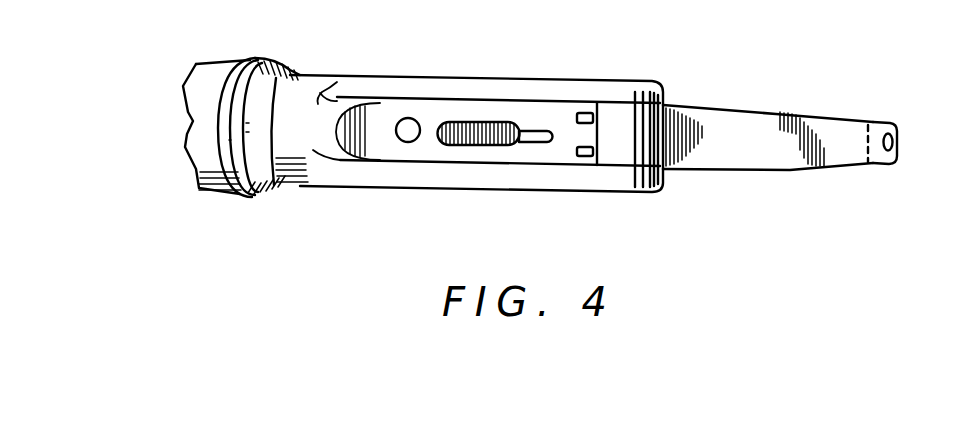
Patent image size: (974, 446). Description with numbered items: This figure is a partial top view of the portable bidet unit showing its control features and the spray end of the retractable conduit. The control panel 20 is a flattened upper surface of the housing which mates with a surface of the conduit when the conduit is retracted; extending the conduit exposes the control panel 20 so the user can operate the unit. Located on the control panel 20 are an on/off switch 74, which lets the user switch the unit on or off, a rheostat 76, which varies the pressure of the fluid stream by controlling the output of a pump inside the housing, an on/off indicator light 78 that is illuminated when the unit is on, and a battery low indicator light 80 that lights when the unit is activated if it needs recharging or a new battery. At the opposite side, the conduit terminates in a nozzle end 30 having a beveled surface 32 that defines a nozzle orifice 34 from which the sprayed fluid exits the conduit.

The control panel 20 is at (468, 105).
The nozzle end 30 is at (908, 177).
The beveled surface 32 is at (880, 120).
The nozzle orifice 34 is at (892, 140).
The on/off switch 74 is at (405, 118).
The rheostat 76 is at (485, 147).
The on/off indicator light 78 is at (583, 112).
The battery low indicator light 80 is at (583, 156).